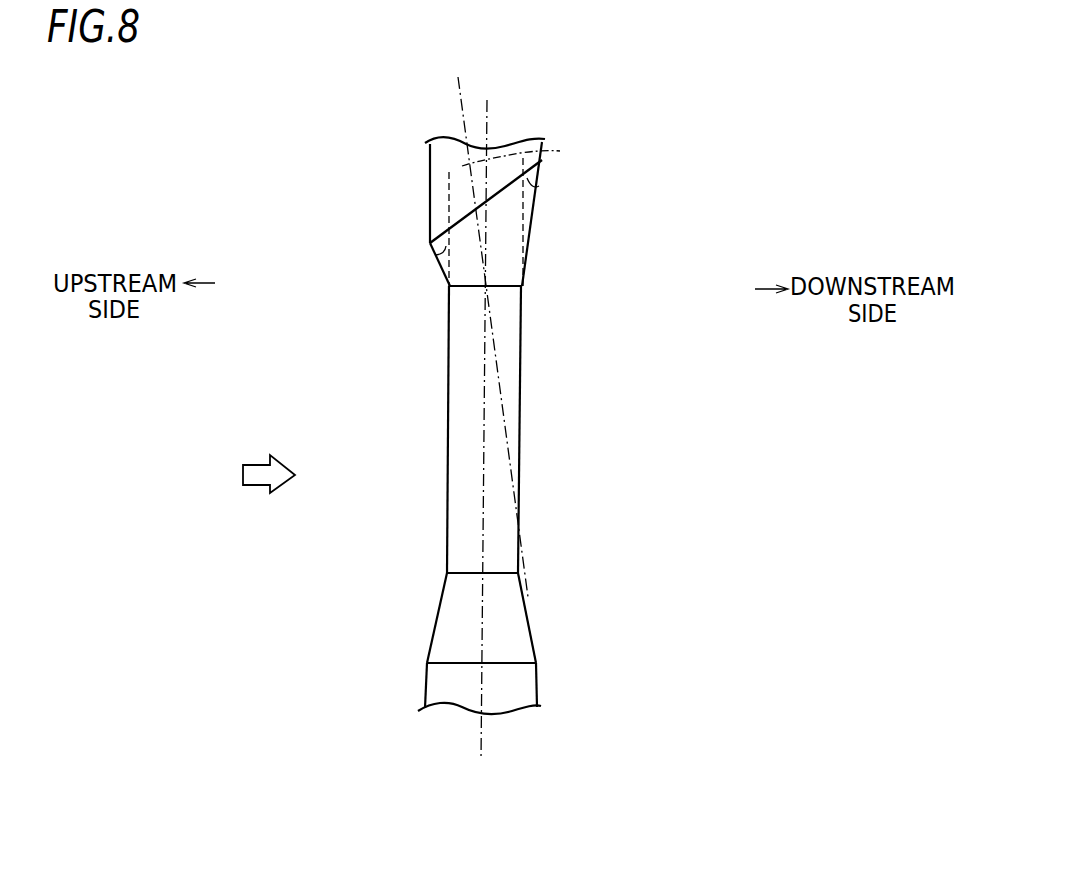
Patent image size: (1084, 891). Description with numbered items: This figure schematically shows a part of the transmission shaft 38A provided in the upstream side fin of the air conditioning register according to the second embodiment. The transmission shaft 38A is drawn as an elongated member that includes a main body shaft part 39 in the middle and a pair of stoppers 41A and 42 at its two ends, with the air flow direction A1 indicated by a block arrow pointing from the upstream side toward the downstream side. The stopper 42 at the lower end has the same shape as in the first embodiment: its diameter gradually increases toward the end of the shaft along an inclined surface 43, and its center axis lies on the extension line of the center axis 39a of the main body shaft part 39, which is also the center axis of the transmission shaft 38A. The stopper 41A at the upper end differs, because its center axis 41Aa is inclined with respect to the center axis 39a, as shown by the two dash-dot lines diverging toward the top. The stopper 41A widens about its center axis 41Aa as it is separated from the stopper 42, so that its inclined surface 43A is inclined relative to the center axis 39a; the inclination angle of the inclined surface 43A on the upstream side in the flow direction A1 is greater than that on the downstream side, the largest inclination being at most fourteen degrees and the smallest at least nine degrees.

The transmission shaft 38A is at (549, 418).
The stopper 41A is at (530, 203).
The center axis of the stopper 41Aa is at (541, 154).
The inclined surface 43A is at (525, 249).
The main body shaft part 39 is at (521, 368).
The center axis of the main body shaft part 39a is at (484, 459).
The inclined surface 43 is at (530, 598).
The stopper 42 is at (520, 650).
The flow direction A1 is at (257, 487).